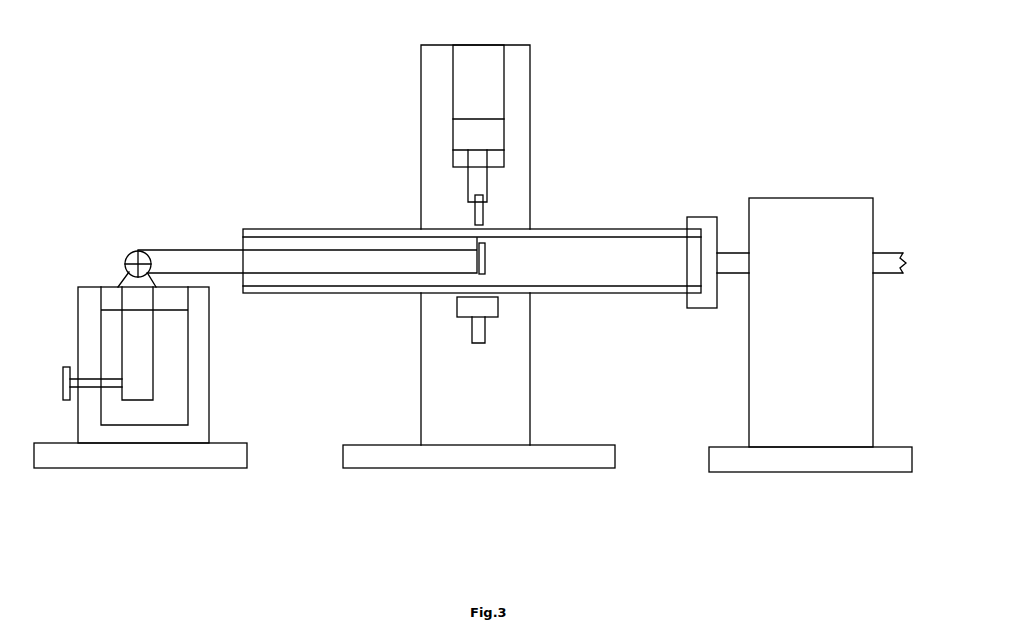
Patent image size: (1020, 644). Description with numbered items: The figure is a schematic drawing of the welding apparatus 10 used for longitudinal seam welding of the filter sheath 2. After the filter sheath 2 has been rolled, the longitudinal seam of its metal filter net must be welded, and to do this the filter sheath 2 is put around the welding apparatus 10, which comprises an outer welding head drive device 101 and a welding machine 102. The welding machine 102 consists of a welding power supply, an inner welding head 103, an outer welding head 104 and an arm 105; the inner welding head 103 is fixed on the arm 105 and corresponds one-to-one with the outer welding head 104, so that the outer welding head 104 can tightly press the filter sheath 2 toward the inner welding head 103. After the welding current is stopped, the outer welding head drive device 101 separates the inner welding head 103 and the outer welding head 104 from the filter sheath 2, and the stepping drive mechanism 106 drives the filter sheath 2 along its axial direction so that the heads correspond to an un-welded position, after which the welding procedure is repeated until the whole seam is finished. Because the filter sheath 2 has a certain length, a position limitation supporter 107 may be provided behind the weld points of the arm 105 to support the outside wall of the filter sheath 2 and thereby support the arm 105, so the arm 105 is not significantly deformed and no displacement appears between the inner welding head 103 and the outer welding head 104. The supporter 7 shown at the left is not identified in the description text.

The filter sheath 2 is at (285, 233).
The support rod 7 is at (135, 388).
The welding apparatus 10 is at (520, 119).
The outer welding head drive device 101 is at (466, 109).
The welding machine 102 is at (515, 165).
The inner welding head 103 is at (507, 228).
The outer welding head 104 is at (479, 213).
The arm 105 is at (187, 259).
The stepping drive mechanism 106 is at (797, 212).
The position limitation supporter 107 is at (482, 308).